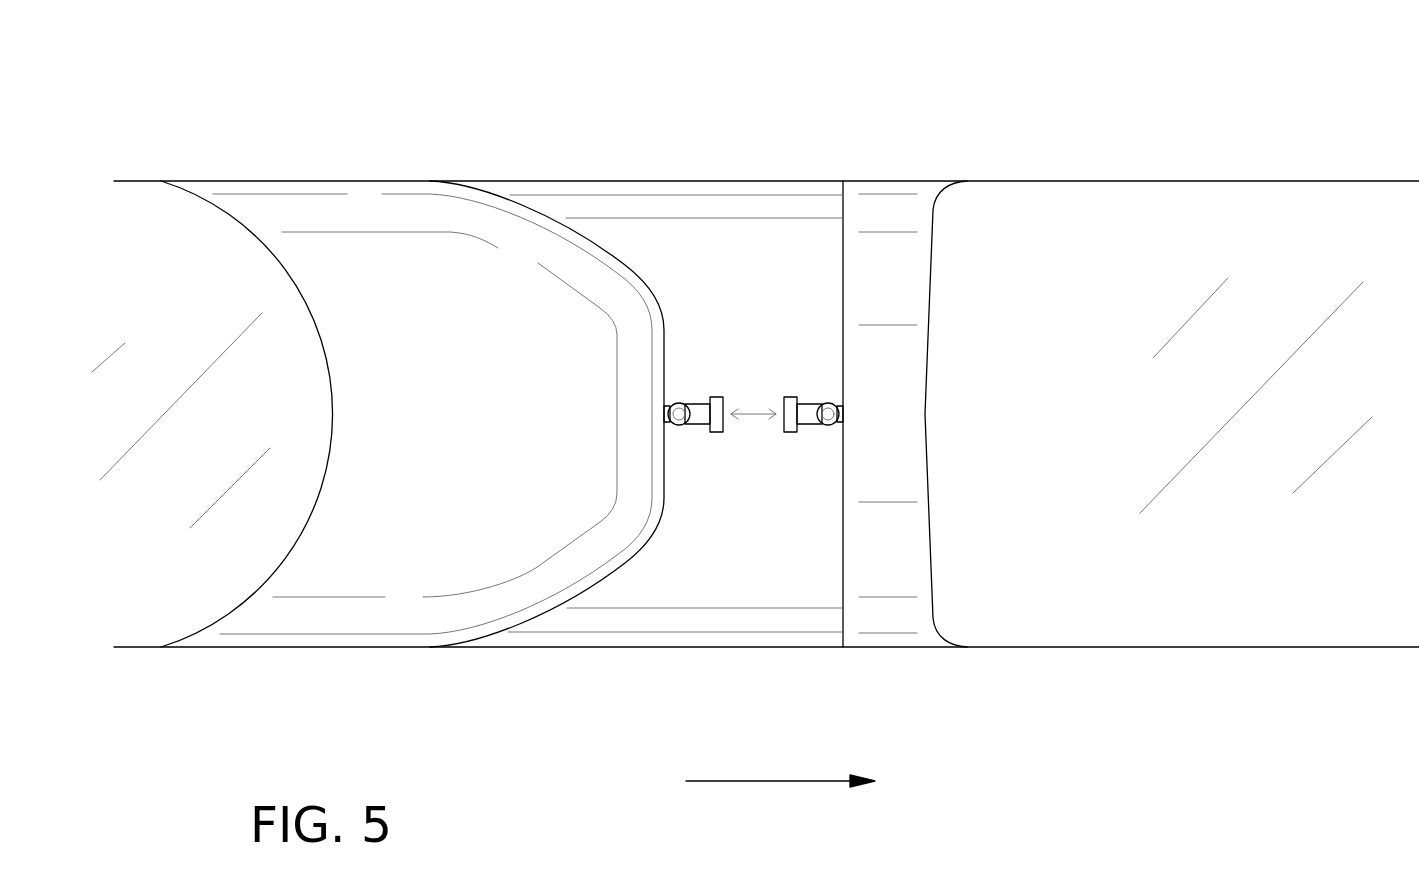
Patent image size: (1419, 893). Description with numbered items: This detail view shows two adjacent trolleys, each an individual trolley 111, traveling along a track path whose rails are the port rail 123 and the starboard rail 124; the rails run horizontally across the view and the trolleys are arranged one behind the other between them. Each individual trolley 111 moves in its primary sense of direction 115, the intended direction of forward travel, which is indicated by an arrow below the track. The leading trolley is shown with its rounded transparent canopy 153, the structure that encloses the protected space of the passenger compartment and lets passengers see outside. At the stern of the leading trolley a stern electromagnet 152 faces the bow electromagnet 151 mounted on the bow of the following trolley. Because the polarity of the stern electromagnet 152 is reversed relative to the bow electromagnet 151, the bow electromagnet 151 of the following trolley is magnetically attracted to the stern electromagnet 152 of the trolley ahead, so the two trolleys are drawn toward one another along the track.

The individual trolley 111 is at (427, 183).
The primary sense of direction 115 is at (780, 765).
The port rail 123 is at (648, 210).
The starboard rail 124 is at (710, 614).
The bow electromagnet 151 is at (681, 403).
The stern electromagnet 152 is at (792, 432).
The canopy 153 is at (175, 213).